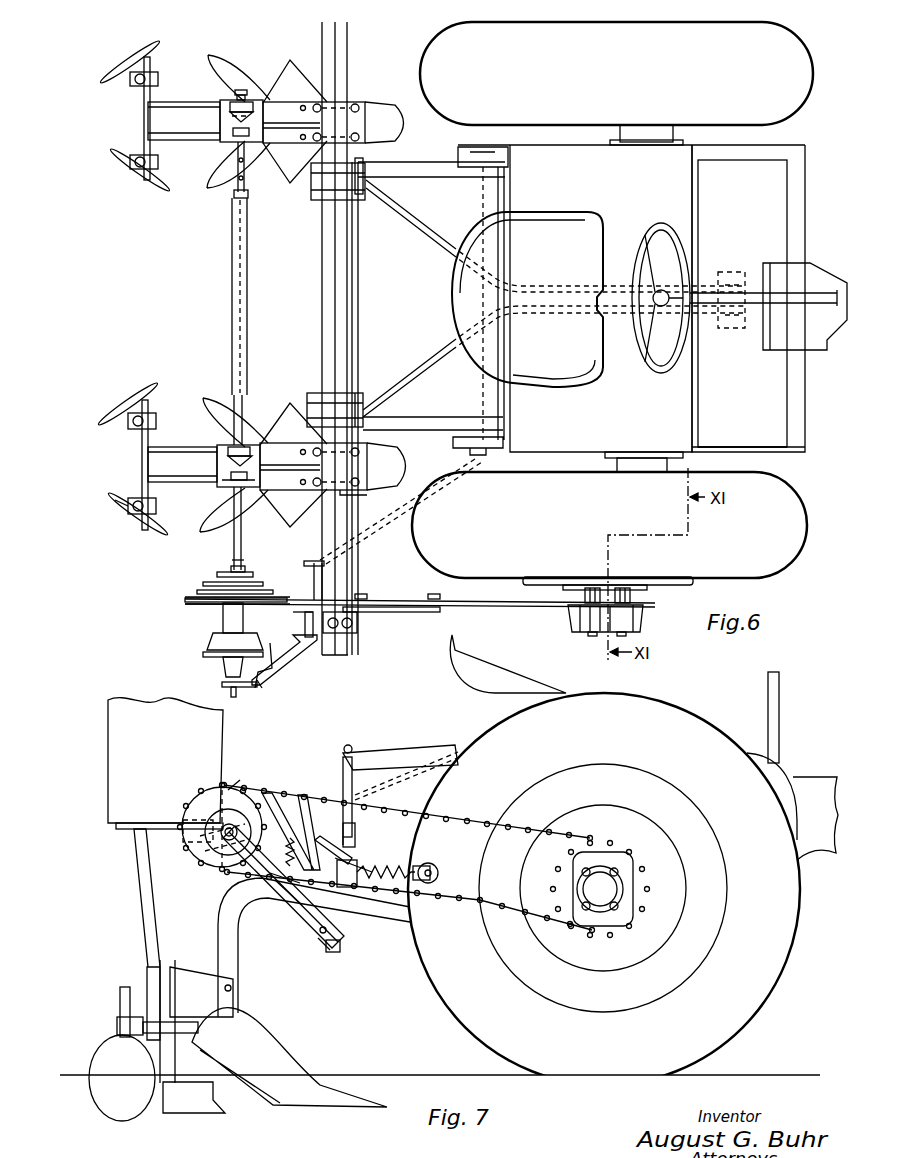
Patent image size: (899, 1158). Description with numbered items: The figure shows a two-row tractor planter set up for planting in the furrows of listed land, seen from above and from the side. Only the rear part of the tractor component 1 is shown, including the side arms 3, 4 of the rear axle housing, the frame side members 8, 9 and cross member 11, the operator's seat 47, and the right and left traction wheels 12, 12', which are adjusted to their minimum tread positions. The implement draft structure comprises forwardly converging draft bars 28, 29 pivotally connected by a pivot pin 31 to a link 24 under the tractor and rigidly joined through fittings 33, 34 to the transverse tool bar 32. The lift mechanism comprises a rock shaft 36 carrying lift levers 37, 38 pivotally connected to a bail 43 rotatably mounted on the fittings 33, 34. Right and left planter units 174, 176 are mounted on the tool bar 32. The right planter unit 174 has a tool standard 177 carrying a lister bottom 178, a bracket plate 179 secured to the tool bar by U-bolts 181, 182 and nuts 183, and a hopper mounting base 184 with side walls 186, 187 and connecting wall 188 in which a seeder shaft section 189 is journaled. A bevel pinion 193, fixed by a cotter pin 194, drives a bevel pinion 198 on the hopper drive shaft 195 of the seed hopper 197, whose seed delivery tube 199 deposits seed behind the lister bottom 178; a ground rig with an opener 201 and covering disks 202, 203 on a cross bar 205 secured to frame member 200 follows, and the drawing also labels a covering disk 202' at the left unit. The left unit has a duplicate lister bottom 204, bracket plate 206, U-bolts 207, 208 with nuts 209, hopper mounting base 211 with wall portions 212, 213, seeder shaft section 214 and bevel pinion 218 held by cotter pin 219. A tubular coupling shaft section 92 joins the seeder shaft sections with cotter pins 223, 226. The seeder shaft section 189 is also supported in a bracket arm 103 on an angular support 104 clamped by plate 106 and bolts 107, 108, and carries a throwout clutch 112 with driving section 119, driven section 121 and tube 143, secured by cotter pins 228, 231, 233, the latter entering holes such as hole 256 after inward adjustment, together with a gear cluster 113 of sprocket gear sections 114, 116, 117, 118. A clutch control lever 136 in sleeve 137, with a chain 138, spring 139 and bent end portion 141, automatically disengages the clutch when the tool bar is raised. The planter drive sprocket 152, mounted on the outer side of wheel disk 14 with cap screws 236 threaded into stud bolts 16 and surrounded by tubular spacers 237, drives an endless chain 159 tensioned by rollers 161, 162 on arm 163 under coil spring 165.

In FIG. 6, the tractor component 1 is at (651, 193).
In FIG. 7, the tractor component 1 is at (824, 803).
In FIG. 6, the side arm of rear axle housing 3 is at (613, 464).
In FIG. 6, the side arm of rear axle housing 4 is at (678, 132).
In FIG. 6, the side member 8 is at (738, 446).
In FIG. 6, the side member 9 is at (738, 163).
In FIG. 6, the cross member 11 is at (800, 205).
In FIG. 6, the rear wheel 12 is at (618, 529).
In FIG. 7, the rear wheel 12 is at (606, 889).
In FIG. 6, the rear wheel 12' is at (627, 73).
In FIG. 6, the disk 14 is at (520, 581).
In FIG. 6, the stud bolts 16 is at (622, 588).
In FIG. 6, the link 24 is at (742, 322).
In FIG. 6, the draft bar 28 is at (442, 360).
In FIG. 6, the draft bar 29 is at (447, 236).
In FIG. 6, the pivot pin 31 is at (735, 265).
In FIG. 6, the tool bar 32 is at (322, 262).
In FIG. 7, the tool bar 32 is at (316, 936).
In FIG. 6, the fitting 33 is at (315, 393).
In FIG. 7, the fitting 33 is at (342, 830).
In FIG. 6, the fitting 34 is at (312, 190).
In FIG. 6, the rock shaft 36 is at (484, 380).
In FIG. 6, the lift lever 37 is at (451, 418).
In FIG. 7, the lift lever 37 is at (396, 756).
In FIG. 6, the lift lever 38 is at (432, 170).
In FIG. 6, the bail 43 is at (359, 284).
In FIG. 7, the bail 43 is at (342, 770).
In FIG. 6, the seat 47 is at (548, 215).
In FIG. 7, the seat 47 is at (458, 678).
In FIG. 6, the tubular coupling shaft section 92 is at (232, 262).
In FIG. 6, the bracket arm 103 is at (262, 684).
In FIG. 7, the bracket arm 103 is at (290, 898).
In FIG. 6, the angular support 104 is at (304, 616).
In FIG. 7, the angular support 104 is at (340, 946).
In FIG. 6, the plate 106 is at (357, 628).
In FIG. 7, the plate 106 is at (344, 910).
In FIG. 7, the bolt 107 is at (346, 920).
In FIG. 7, the bolt 108 is at (318, 928).
In FIG. 6, the throwout clutch 112 is at (203, 655).
In FIG. 7, the throwout clutch 112 is at (208, 800).
In FIG. 6, the gear cluster 113 is at (185, 604).
In FIG. 7, the gear cluster 113 is at (264, 770).
In FIG. 6, the sprocket gear section 114 is at (186, 600).
In FIG. 6, the sprocket gear section 116 is at (198, 592).
In FIG. 6, the sprocket gear section 117 is at (205, 583).
In FIG. 6, the sprocket gear section 118 is at (220, 574).
In FIG. 6, the driving section 119 is at (215, 640).
In FIG. 6, the driven section 121 is at (225, 665).
In FIG. 6, the clutch control lever 136 is at (302, 650).
In FIG. 7, the clutch control lever 136 is at (272, 800).
In FIG. 6, the sleeve part 137 is at (313, 588).
In FIG. 6, the chain 138 is at (372, 528).
In FIG. 7, the chain 138 is at (372, 786).
In FIG. 7, the spring 139 is at (278, 880).
In FIG. 6, the end portion 141 is at (270, 644).
In FIG. 6, the tube 143 is at (224, 616).
In FIG. 6, the drive sprocket 152 is at (642, 620).
In FIG. 7, the drive sprocket 152 is at (560, 882).
In FIG. 6, the endless chain 159 is at (468, 606).
In FIG. 7, the endless chain 159 is at (462, 816).
In FIG. 6, the roller 161 is at (358, 594).
In FIG. 7, the roller 161 is at (355, 850).
In FIG. 6, the roller 162 is at (428, 595).
In FIG. 7, the roller 162 is at (434, 868).
In FIG. 6, the arm 163 is at (405, 612).
In FIG. 7, the arm 163 is at (366, 864).
In FIG. 7, the coil spring 165 is at (356, 886).
In FIG. 6, the right planter unit 174 is at (142, 528).
In FIG. 7, the right planter unit 174 is at (117, 1023).
In FIG. 6, the left planter unit 176 is at (140, 176).
In FIG. 7, the tool standard 177 is at (236, 963).
In FIG. 6, the lister bottom 178 is at (400, 463).
In FIG. 7, the lister bottom 178 is at (262, 1046).
In FIG. 6, the bracket plate 179 is at (367, 455).
In FIG. 6, the U-bolt 181 is at (320, 495).
In FIG. 6, the U-bolt 182 is at (324, 441).
In FIG. 6, the nuts 183 is at (352, 491).
In FIG. 6, the hopper mounting base 184 is at (242, 512).
In FIG. 7, the hopper mounting base 184 is at (202, 872).
In FIG. 6, the side wall 186 is at (218, 483).
In FIG. 6, the side wall 187 is at (232, 440).
In FIG. 6, the connecting wall 188 is at (300, 460).
In FIG. 6, the seeder shaft section 189 is at (244, 556).
In FIG. 6, the bevel pinion 193 is at (228, 447).
In FIG. 7, the bevel pinion 193 is at (240, 815).
In FIG. 6, the cotter pin 194 is at (220, 467).
In FIG. 7, the hopper drive shaft 195 is at (190, 814).
In FIG. 7, the seed hopper 197 is at (109, 745).
In FIG. 7, the bevel pinion 198 is at (192, 848).
In FIG. 7, the seed delivery tube 199 is at (140, 864).
In FIG. 6, the frame member 200 is at (158, 446).
In FIG. 7, the opener 201 is at (222, 1110).
In FIG. 7, the covering disk 202 is at (120, 1091).
In FIG. 6, the lower blade 202' is at (126, 342).
In FIG. 6, the covering disk 203 is at (135, 412).
In FIG. 6, the lister bottom 204 is at (407, 125).
In FIG. 6, the cross bar 205 is at (128, 505).
In FIG. 6, the bracket plate 206 is at (367, 106).
In FIG. 6, the U-bolt 207 is at (325, 150).
In FIG. 6, the U-bolt 208 is at (326, 100).
In FIG. 6, the nuts 209 is at (357, 122).
In FIG. 6, the hopper mounting base 211 is at (252, 175).
In FIG. 6, the wall portion 212 is at (236, 152).
In FIG. 6, the wall portion 213 is at (235, 95).
In FIG. 6, the seeder shaft section 214 is at (250, 75).
In FIG. 6, the bevel pinion 218 is at (228, 118).
In FIG. 6, the cotter pin 219 is at (225, 134).
In FIG. 6, the cotter pin 223 is at (234, 386).
In FIG. 6, the cotter pin 226 is at (233, 198).
In FIG. 6, the cotter pin 228 is at (228, 681).
In FIG. 6, the cotter pin 231 is at (245, 570).
In FIG. 6, the cotter pin 233 is at (233, 697).
In FIG. 6, the cap screws 236 is at (590, 634).
In FIG. 7, the cap screws 236 is at (590, 933).
In FIG. 6, the tubular spacers 237 is at (585, 615).
In FIG. 6, the hole 256 is at (226, 516).